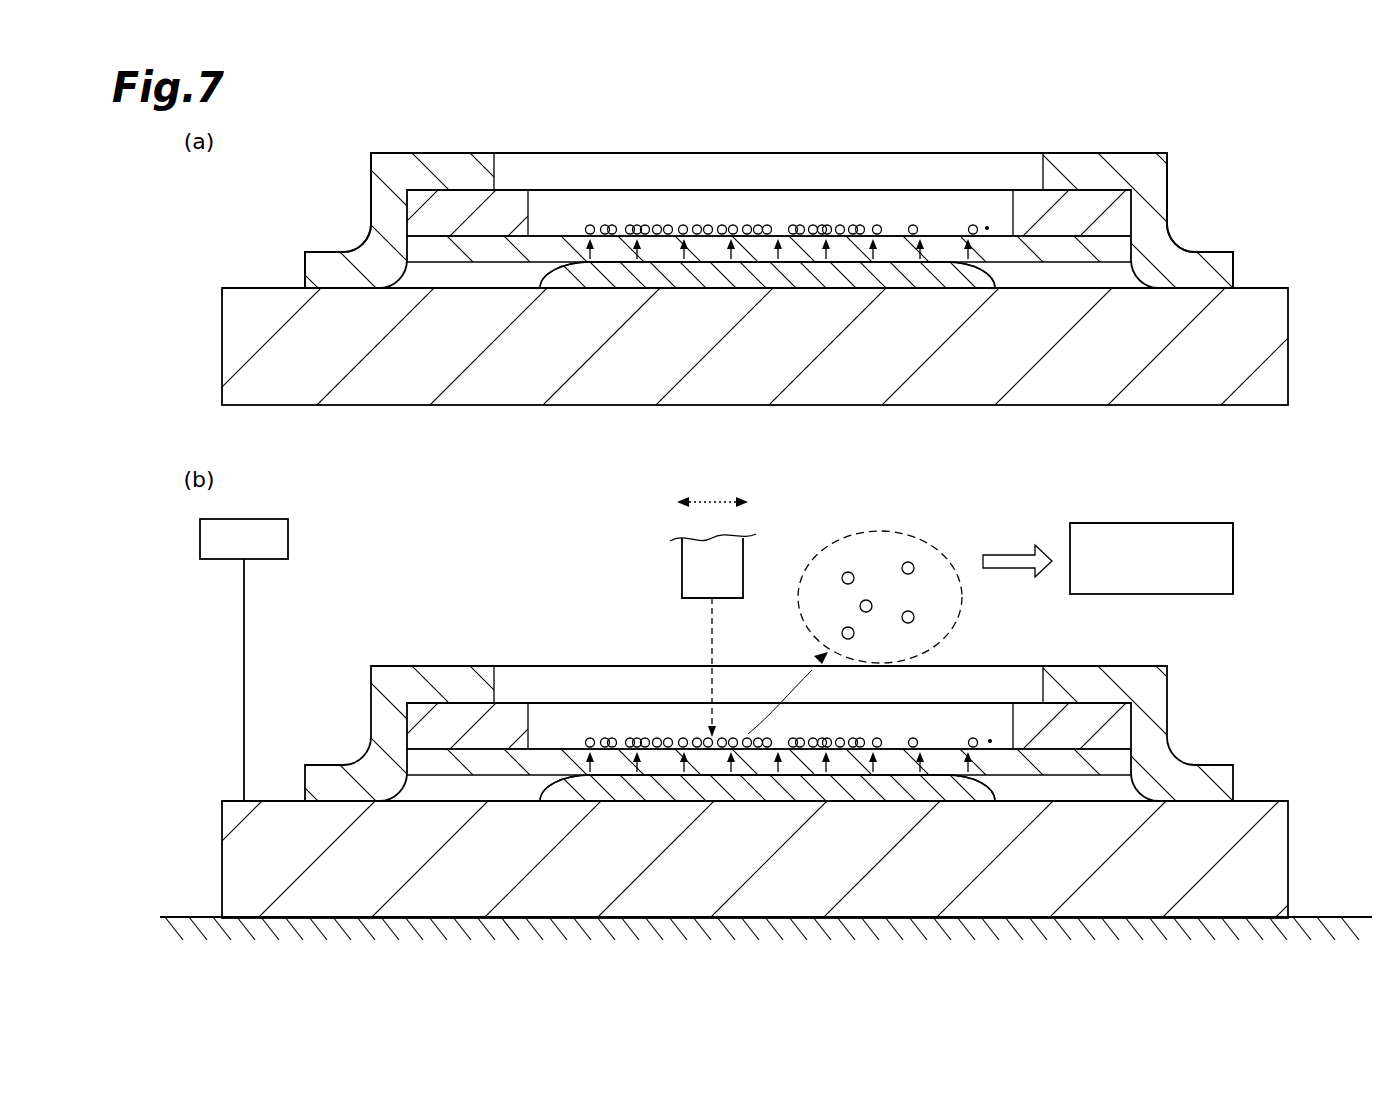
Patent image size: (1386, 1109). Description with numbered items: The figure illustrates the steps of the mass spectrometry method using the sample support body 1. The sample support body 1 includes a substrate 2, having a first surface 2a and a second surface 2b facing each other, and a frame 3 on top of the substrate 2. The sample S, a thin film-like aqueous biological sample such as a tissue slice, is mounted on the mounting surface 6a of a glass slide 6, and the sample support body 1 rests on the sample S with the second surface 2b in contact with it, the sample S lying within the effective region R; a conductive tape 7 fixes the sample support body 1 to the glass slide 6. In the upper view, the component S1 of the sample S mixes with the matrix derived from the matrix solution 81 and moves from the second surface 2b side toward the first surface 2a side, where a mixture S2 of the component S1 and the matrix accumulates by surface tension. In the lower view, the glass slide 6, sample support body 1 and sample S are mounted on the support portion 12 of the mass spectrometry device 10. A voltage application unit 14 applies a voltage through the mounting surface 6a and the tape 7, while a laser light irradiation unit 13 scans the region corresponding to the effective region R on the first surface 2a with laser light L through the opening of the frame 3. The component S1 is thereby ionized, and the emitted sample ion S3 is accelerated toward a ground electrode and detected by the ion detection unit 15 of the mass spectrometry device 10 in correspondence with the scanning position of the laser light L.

The sample support body 1 is at (1106, 186).
The substrate 2 is at (1125, 247).
The first surface 2a is at (553, 232).
The second surface 2b is at (515, 258).
The frame 3 is at (1026, 200).
The glass slide 6 is at (1286, 350).
The mounting surface 6a is at (1242, 288).
The tape 7 is at (1205, 252).
The mass spectrometry device 10 is at (1218, 524).
The support portion 12 is at (196, 916).
The laser light irradiation unit 13 is at (682, 573).
The voltage application unit 14 is at (290, 537).
The ion detection unit 15 is at (1236, 561).
The laser light L is at (710, 633).
The effective region R is at (987, 227).
The sample S is at (993, 287).
The component S1 is at (779, 613).
The matrix solution 81 is at (779, 254).
The mixture S2 is at (913, 225).
The sample ion S3 is at (908, 561).